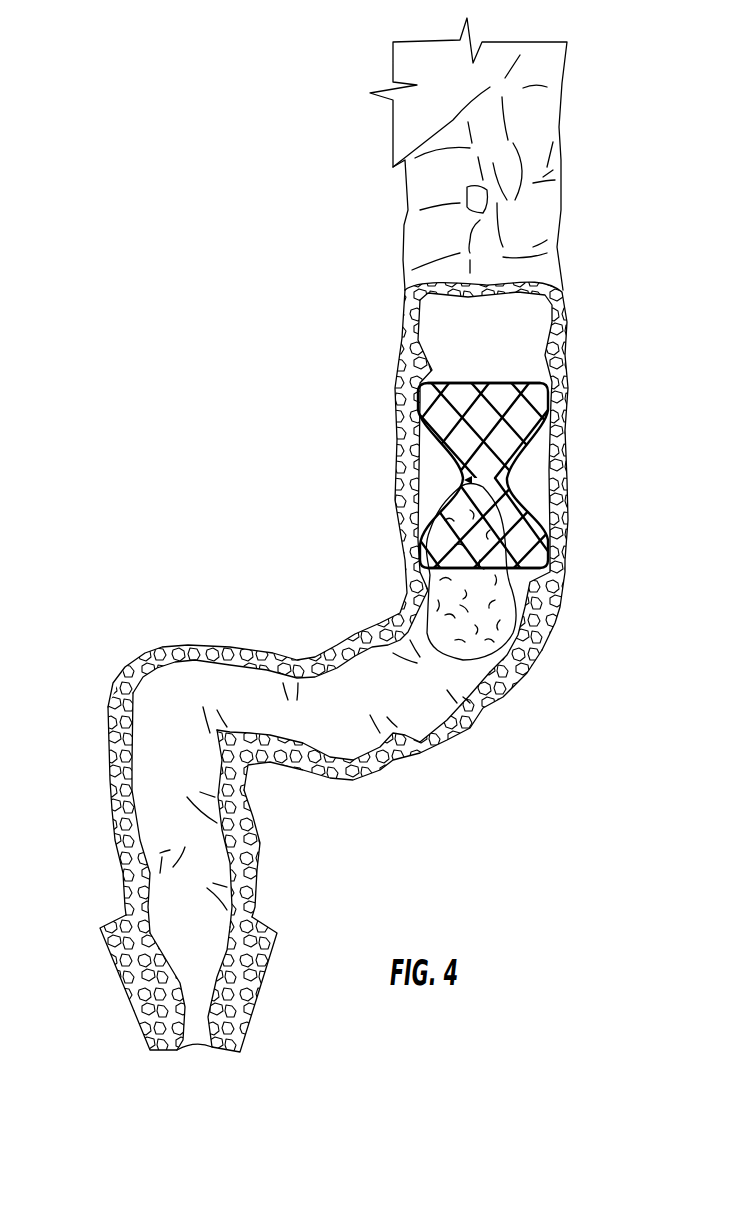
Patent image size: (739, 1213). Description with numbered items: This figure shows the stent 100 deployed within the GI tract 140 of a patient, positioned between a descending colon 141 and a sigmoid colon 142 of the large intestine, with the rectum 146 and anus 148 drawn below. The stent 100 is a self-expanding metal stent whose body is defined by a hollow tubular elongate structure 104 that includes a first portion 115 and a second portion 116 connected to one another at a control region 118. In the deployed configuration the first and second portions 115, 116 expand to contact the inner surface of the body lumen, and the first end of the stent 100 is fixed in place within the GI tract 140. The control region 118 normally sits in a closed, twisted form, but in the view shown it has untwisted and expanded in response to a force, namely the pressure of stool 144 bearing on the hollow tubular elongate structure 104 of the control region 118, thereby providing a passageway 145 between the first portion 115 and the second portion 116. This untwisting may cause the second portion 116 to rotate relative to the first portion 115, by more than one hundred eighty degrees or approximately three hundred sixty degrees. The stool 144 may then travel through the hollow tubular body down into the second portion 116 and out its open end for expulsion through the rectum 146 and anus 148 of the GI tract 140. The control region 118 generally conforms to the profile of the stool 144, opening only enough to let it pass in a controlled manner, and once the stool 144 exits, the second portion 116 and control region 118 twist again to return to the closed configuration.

The stent 100 is at (495, 448).
The hollow tubular elongate structure 104 is at (523, 453).
The first portion 115 is at (552, 386).
The second portion 116 is at (558, 566).
The control region 118 is at (515, 478).
The GI tract 140 is at (272, 670).
The descending colon 141 is at (537, 121).
The sigmoid colon 142 is at (342, 735).
The stool 144 is at (525, 652).
The passageway 145 is at (455, 480).
The rectum 146 is at (160, 822).
The anus 148 is at (157, 1032).